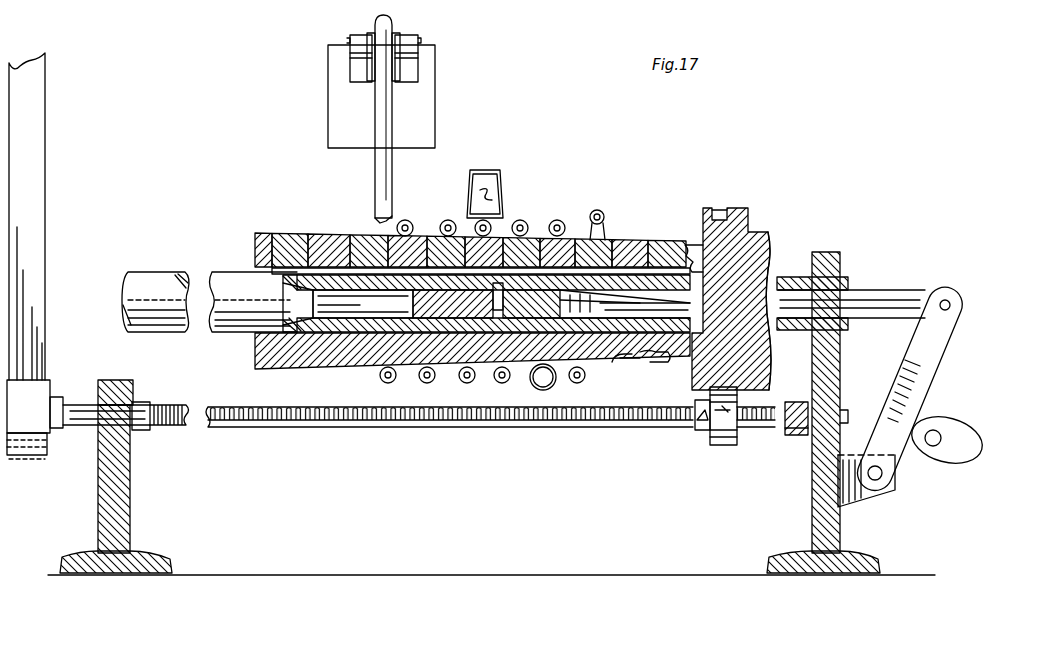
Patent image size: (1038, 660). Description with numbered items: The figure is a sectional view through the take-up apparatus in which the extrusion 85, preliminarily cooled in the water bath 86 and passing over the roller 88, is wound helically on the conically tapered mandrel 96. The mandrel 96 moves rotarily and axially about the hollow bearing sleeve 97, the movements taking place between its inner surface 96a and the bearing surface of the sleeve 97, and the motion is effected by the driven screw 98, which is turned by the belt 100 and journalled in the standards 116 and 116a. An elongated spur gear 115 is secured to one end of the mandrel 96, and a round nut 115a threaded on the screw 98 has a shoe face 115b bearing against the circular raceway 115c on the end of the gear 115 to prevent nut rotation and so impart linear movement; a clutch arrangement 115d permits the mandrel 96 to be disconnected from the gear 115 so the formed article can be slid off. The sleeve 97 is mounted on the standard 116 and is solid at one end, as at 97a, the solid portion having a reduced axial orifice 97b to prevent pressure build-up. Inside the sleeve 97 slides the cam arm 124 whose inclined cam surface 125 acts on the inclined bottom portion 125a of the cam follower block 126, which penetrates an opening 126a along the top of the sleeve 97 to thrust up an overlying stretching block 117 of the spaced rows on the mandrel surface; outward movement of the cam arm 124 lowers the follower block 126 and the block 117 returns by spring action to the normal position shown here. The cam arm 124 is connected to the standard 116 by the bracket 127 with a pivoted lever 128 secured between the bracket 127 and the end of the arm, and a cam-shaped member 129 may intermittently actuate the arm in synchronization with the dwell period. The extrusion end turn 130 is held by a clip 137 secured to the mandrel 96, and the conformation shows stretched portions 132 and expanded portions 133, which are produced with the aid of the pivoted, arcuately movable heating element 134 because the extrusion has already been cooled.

The extrusion 85 is at (393, 178).
The water bath 86 is at (328, 126).
The roller 88 is at (418, 32).
The mandrel 96 is at (252, 343).
The inner surface 96a is at (338, 336).
The hollow bearing sleeve 97 is at (780, 268).
The solid portion 97a is at (222, 275).
The reduced axial orifice 97b is at (156, 300).
The driven screw 98 is at (155, 431).
The belt 100 is at (40, 246).
The elongated spur gear 115 is at (776, 225).
The round nut 115a is at (728, 447).
The shoe face 115b is at (705, 424).
The circular raceway 115c is at (727, 210).
The clutch arrangement 115d is at (688, 242).
The standard 116 is at (812, 522).
The standard 116a is at (125, 537).
The stretching block 117 is at (296, 229).
The cam arm 124 is at (871, 290).
The inclined cam surface 125 is at (598, 292).
The inclined bottom portion 125a is at (412, 304).
The cam follower block 126 is at (522, 283).
The opening 126a is at (505, 255).
The bracket 127 is at (872, 497).
The pivoted lever 128 is at (945, 375).
The cam-shaped member 129 is at (968, 435).
The extrusion end turn 130 is at (621, 375).
The stretched portion 132 is at (601, 211).
The expanded portion 133 is at (530, 382).
The heating element 134 is at (498, 200).
The clip 137 is at (650, 364).